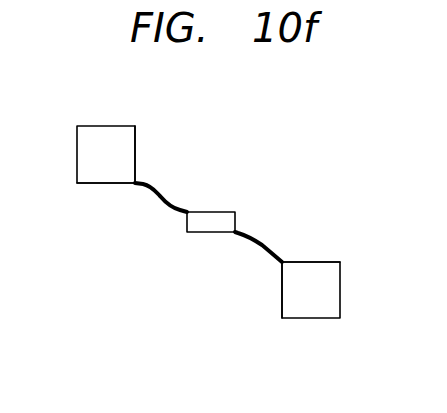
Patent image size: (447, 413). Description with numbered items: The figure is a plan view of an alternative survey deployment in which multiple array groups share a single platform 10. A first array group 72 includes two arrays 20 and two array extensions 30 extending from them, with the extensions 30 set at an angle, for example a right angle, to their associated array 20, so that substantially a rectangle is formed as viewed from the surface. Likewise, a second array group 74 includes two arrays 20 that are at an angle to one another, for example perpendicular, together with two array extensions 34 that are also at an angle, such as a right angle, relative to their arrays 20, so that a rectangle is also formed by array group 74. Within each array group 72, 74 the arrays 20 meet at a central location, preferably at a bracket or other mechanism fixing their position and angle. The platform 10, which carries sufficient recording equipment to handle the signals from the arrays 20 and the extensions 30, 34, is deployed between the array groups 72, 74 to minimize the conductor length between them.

The platform 10 is at (213, 212).
The array 20 is at (135, 151).
The array extension 30 is at (105, 126).
The array extension 34 is at (341, 291).
The first array group 72 is at (163, 106).
The second array group 74 is at (258, 341).